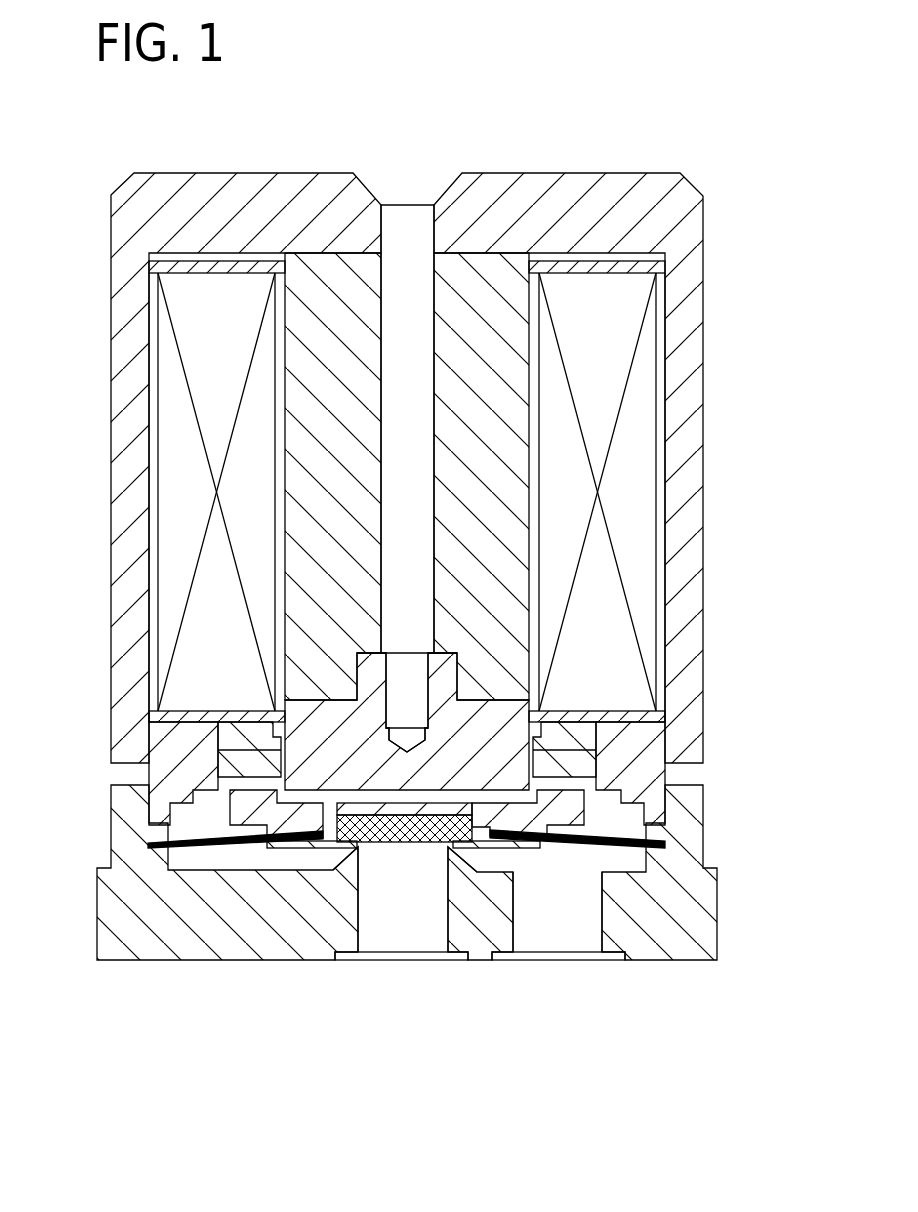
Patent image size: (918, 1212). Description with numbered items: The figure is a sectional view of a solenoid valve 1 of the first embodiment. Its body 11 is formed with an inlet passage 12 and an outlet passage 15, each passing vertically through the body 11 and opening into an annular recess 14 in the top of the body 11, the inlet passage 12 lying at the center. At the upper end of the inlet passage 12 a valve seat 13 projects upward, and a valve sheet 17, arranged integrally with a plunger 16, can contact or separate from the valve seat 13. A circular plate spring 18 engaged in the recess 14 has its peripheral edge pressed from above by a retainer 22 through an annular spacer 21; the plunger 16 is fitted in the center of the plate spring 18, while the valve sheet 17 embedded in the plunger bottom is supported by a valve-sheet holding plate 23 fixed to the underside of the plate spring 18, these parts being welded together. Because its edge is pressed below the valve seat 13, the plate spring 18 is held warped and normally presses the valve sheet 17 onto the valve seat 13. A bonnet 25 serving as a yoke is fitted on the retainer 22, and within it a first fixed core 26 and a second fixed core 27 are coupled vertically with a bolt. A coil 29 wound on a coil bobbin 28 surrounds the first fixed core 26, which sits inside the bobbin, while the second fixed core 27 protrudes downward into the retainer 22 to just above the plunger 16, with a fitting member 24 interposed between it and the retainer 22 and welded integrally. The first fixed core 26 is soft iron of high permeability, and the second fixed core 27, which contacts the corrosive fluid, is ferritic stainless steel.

The solenoid valve 1 is at (432, 107).
The body 11 is at (225, 937).
The inlet passage 12 is at (383, 933).
The valve seat 13 is at (449, 850).
The annular recess 14 is at (148, 846).
The outlet passage 15 is at (570, 938).
The plunger 16 is at (225, 815).
The valve sheet 17 is at (343, 813).
The plate spring 18 is at (640, 813).
The annular spacer 21 is at (663, 834).
The retainer 22 is at (633, 743).
The valve-sheet holding plate 23 is at (513, 847).
The fitting member 24 is at (565, 722).
The bonnet 25 is at (578, 193).
The first fixed core 26 is at (483, 381).
The second fixed core 27 is at (487, 732).
The coil bobbin 28 is at (282, 388).
The coil 29 is at (168, 453).